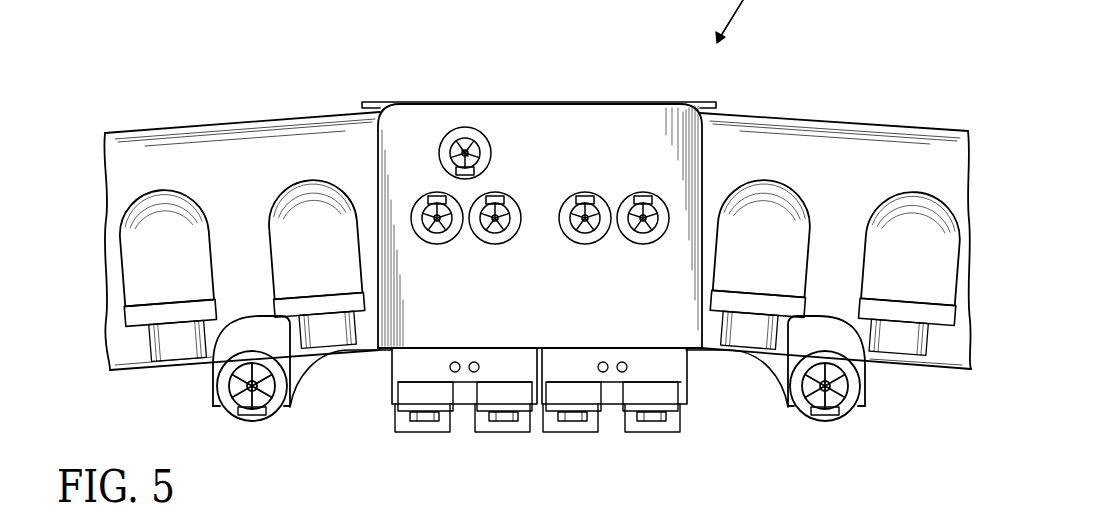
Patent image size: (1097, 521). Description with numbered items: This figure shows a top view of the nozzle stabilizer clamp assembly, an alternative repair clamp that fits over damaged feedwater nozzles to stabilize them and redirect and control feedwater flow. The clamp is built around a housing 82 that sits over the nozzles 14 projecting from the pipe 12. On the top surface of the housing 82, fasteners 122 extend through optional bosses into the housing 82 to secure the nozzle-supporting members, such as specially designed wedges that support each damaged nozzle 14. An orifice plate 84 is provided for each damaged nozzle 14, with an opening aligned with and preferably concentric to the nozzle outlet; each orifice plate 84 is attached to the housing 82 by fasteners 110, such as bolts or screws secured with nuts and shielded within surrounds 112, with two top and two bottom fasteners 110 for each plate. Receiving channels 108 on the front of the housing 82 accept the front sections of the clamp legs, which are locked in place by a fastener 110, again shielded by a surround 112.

The pipe 12 is at (850, 118).
The nozzle 14 is at (158, 258).
The housing 82 is at (547, 168).
The orifice plate 84 is at (382, 382).
The receiving channel 108 is at (233, 337).
The fastener 110 is at (257, 393).
The surround 112 is at (425, 196).
The fastener 122 is at (506, 195).